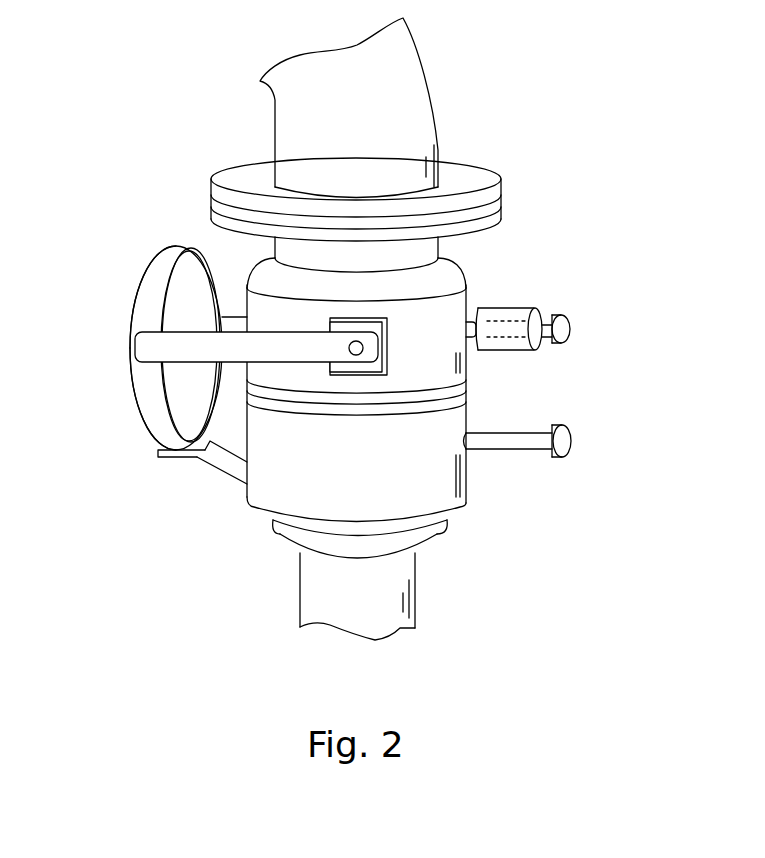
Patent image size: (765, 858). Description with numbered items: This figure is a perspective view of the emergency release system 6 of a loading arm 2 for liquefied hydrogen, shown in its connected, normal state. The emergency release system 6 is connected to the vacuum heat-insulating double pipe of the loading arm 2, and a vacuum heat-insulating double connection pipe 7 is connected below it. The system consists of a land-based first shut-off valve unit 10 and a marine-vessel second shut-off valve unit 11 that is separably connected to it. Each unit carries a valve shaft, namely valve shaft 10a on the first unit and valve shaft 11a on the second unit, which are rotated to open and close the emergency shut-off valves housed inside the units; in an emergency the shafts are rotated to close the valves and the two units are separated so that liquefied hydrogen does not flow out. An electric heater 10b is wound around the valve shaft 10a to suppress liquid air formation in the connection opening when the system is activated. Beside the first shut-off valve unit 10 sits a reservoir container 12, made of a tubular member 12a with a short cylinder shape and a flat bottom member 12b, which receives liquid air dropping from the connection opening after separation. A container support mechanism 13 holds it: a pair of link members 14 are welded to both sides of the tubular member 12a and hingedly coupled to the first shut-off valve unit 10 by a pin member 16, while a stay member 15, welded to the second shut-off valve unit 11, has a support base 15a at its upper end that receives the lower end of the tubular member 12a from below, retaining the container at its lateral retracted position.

The loading arm 2 is at (427, 50).
The emergency release system 6 is at (545, 208).
The vacuum heat-insulating double connection pipe 7 is at (407, 602).
The first shut-off valve unit 10 is at (468, 293).
The valve shaft 10a is at (567, 337).
The electric heater 10b is at (527, 308).
The second shut-off valve unit 11 is at (468, 473).
The valve shaft 11a is at (565, 441).
The reservoir container 12 is at (133, 297).
The tubular member 12a is at (153, 255).
The bottom member 12b is at (177, 292).
The container support mechanism 13 is at (122, 412).
The link members 14 is at (145, 350).
The stay member 15 is at (220, 468).
The support base 15a is at (167, 458).
The pin member 16 is at (363, 348).